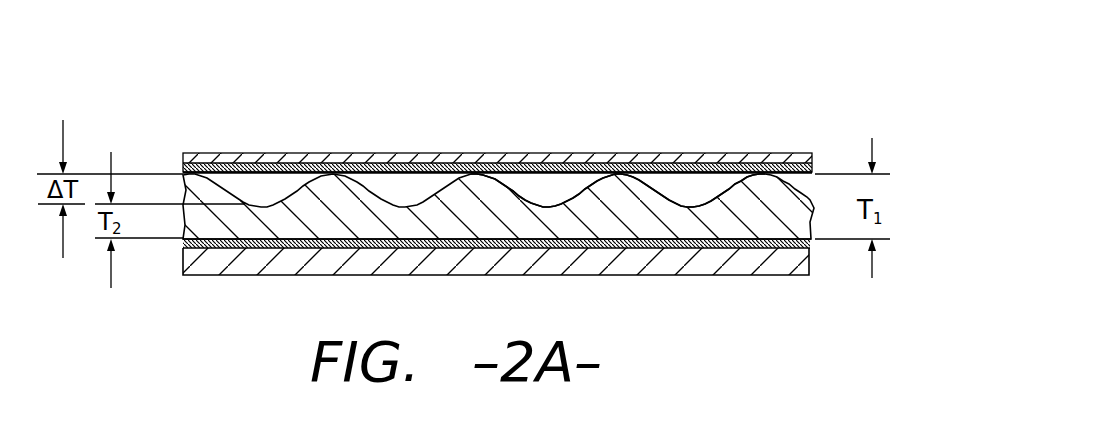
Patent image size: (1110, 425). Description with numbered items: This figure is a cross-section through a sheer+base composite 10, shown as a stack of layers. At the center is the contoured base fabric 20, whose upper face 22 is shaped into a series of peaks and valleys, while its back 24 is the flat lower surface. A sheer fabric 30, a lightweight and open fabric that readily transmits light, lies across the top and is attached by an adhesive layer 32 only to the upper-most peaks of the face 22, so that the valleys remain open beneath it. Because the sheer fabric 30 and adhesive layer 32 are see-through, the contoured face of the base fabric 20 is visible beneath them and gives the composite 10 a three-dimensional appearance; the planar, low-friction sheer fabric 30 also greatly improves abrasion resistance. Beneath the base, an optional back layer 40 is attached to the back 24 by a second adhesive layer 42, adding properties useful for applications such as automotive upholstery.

The sheer+base composite 10 is at (476, 162).
The base fabric 20 is at (345, 188).
The face of base fabric 22 is at (515, 177).
The back of base fabric 24 is at (668, 240).
The sheer fabric 30 is at (313, 153).
The adhesive layer 32 is at (183, 174).
The back layer 40 is at (697, 277).
The adhesive layer 42 is at (182, 243).